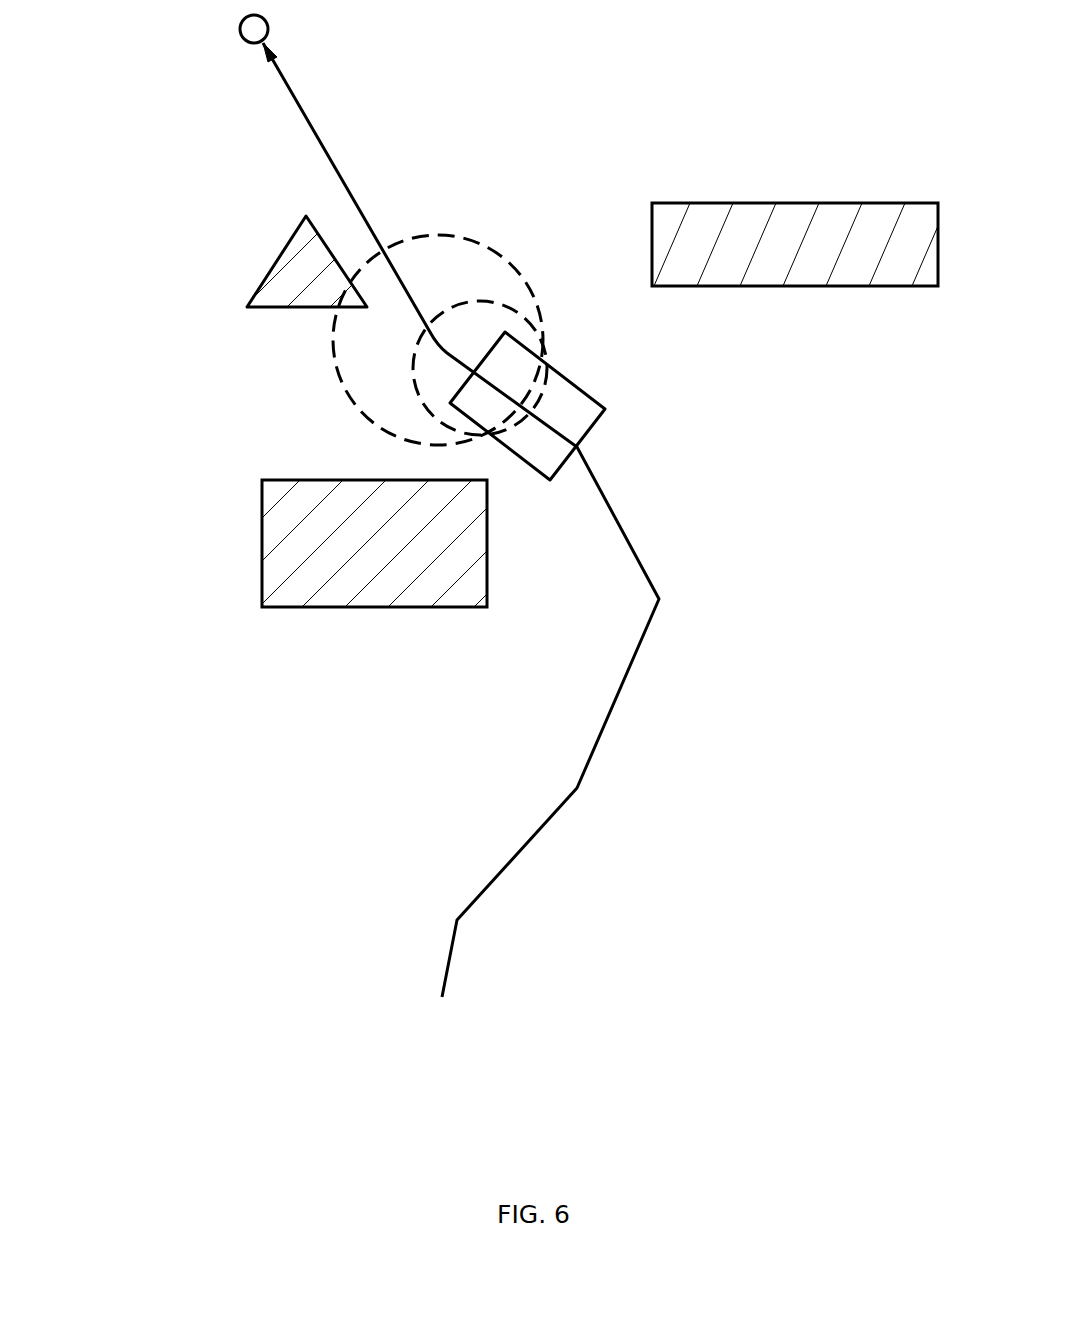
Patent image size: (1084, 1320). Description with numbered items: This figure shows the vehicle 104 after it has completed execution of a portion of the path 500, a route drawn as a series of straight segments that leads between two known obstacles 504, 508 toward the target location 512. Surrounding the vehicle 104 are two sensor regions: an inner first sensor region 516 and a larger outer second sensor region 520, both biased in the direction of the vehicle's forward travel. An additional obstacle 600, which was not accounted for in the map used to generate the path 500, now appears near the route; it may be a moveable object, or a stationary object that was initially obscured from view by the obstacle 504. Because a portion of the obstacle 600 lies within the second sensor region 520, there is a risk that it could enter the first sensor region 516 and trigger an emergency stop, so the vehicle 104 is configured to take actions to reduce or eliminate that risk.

The path 500 is at (660, 641).
The target location 512 is at (241, 19).
The second sensor region 520 is at (441, 239).
The first sensor region 516 is at (522, 321).
The vehicle 104 is at (601, 418).
The obstacle 508 is at (793, 200).
The obstacle 504 is at (262, 545).
The obstacle 600 is at (274, 262).